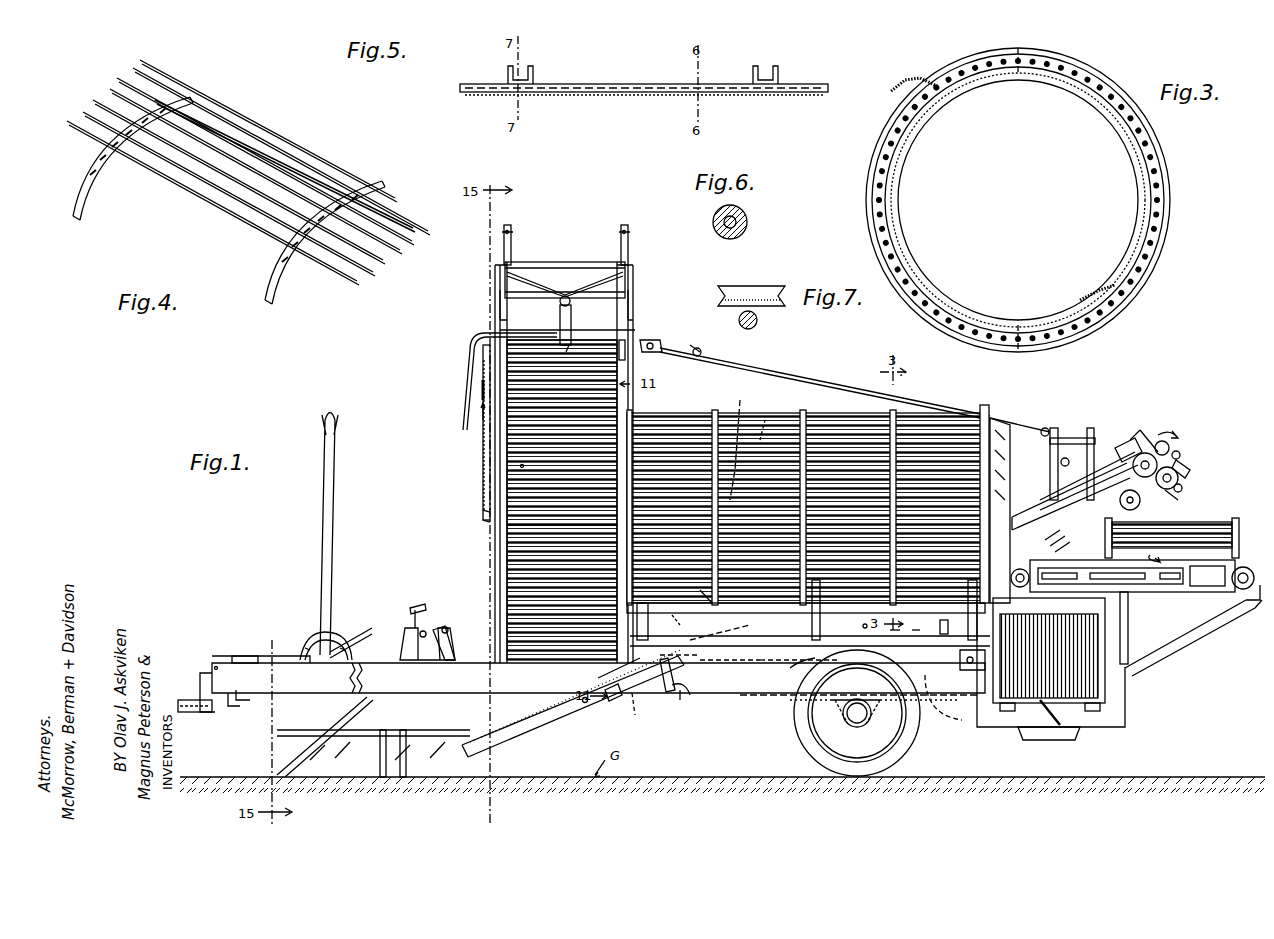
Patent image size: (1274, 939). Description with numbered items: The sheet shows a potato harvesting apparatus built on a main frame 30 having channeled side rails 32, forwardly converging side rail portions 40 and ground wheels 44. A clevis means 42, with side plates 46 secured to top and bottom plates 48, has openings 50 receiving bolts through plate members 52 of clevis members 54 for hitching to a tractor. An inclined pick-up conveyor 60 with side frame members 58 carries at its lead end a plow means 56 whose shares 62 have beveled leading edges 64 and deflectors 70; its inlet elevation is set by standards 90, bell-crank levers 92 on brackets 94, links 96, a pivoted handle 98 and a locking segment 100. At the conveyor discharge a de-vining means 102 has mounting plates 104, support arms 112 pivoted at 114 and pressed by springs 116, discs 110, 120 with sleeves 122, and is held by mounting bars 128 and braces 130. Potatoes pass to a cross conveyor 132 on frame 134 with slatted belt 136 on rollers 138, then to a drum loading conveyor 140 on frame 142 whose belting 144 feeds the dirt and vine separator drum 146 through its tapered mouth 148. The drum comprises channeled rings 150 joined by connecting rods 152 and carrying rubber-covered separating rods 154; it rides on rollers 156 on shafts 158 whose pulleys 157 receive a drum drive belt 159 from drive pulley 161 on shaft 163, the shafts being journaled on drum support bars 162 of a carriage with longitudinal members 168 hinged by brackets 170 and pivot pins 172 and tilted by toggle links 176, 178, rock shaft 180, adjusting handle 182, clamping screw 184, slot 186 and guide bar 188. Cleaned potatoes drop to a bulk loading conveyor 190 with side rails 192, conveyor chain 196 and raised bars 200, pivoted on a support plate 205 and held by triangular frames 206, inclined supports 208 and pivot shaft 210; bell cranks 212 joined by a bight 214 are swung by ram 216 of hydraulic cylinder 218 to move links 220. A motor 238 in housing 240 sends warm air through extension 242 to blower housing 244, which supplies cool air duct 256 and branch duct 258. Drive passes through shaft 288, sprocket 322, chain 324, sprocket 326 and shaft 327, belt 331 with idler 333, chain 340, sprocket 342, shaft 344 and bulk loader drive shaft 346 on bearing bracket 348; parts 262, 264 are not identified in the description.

In FIG. 1, the main frame 30 is at (745, 690).
In FIG. 1, the side rails 32 is at (788, 700).
In FIG. 1, the forwardly converging side rail portions 40 is at (345, 693).
In FIG. 1, the clevis means 42 is at (224, 658).
In FIG. 1, the ground wheels 44 is at (800, 733).
In FIG. 1, the side plates 46 is at (232, 708).
In FIG. 1, the top and bottom plates 48 is at (252, 656).
In FIG. 1, the openings 50 is at (215, 662).
In FIG. 1, the upstanding plate members 52 is at (200, 690).
In FIG. 1, the clevis members 54 is at (200, 714).
In FIG. 1, the plow means 56 is at (300, 760).
In FIG. 1, the side frame members 58 is at (512, 745).
In FIG. 1, the pick-up conveyor 60 is at (568, 725).
In FIG. 1, the shares 62 is at (345, 770).
In FIG. 1, the beveled leading edges 64 is at (322, 738).
In FIG. 1, the deflectors 70 is at (396, 775).
In FIG. 1, the standards 90 is at (448, 628).
In FIG. 1, the angular levers 92 is at (426, 630).
In FIG. 1, the upstanding brackets 94 is at (405, 650).
In FIG. 1, the links 96 is at (360, 635).
In FIG. 1, the pivoted handle 98 is at (330, 420).
In FIG. 1, the locking segment 100 is at (315, 638).
In FIG. 1, the de-vining means 102 is at (1160, 430).
In FIG. 1, the mounting plates 104 is at (1127, 428).
In FIG. 1, the discs 110 is at (1155, 475).
In FIG. 1, the support arms 112 is at (1180, 470).
In FIG. 1, the pivotal connection 114 is at (1190, 470).
In FIG. 1, the springs 116 is at (1145, 432).
In FIG. 1, the discs 120 is at (1182, 487).
In FIG. 1, the sleeves 122 is at (1215, 486).
In FIG. 1, the mounting bars 128 is at (1120, 445).
In FIG. 1, the braces 130 is at (1120, 490).
In FIG. 1, the cross conveyor 132 is at (1213, 530).
In FIG. 1, the cross conveyor frame 134 is at (1185, 645).
In FIG. 1, the slatted conveyor belt 136 is at (1165, 522).
In FIG. 1, the rollers 138 is at (1110, 528).
In FIG. 1, the drum loading conveyor 140 is at (1140, 592).
In FIG. 1, the drum loading conveyor frame 142 is at (1170, 595).
In FIG. 1, the belting 144 is at (1245, 605).
In FIG. 3, the dirt and vine separator drum 146 is at (1105, 78).
In FIG. 1, the dirt and vine separator drum 146 is at (831, 400).
In FIG. 1, the tapered mouth 148 is at (1000, 418).
In FIG. 4, the rings 150 is at (190, 95).
In FIG. 5, the rings 150 is at (530, 70).
In FIG. 7, the rings 150 is at (752, 286).
In FIG. 3, the rings 150 is at (1150, 128).
In FIG. 1, the rings 150 is at (650, 412).
In FIG. 4, the connecting rods 152 is at (403, 220).
In FIG. 3, the connecting rods 152 is at (1020, 70).
In FIG. 1, the connecting rods 152 is at (743, 420).
In FIG. 4, the separating rods 154 is at (95, 145).
In FIG. 5, the separating rods 154 is at (480, 95).
In FIG. 6, the separating rods 154 is at (748, 215).
In FIG. 7, the separating rods 154 is at (758, 322).
In FIG. 3, the separating rods 154 is at (1158, 210).
In FIG. 1, the separating rods 154 is at (680, 430).
In FIG. 1, the rollers 156 is at (998, 548).
In FIG. 1, the pulleys 157 is at (905, 641).
In FIG. 1, the shaft 158 is at (714, 604).
In FIG. 1, the drum drive belt 159 is at (926, 641).
In FIG. 1, the drum drive pulley 161 is at (944, 634).
In FIG. 1, the drum support bars 162 is at (645, 603).
In FIG. 1, the shaft 163 is at (864, 628).
In FIG. 1, the longitudinal members 168 is at (800, 662).
In FIG. 1, the bifurcated brackets 170 is at (968, 664).
In FIG. 1, the pivot pins 172 is at (955, 660).
In FIG. 1, the depending links 176 is at (619, 673).
In FIG. 1, the cooperating links 178 is at (645, 712).
In FIG. 1, the rock shaft 180 is at (600, 702).
In FIG. 1, the adjusting handle 182 is at (615, 702).
In FIG. 1, the clamping screw 184 is at (668, 692).
In FIG. 1, the longitudinal slot 186 is at (685, 695).
In FIG. 1, the guide bar 188 is at (682, 702).
In FIG. 1, the bulk loading conveyor 190 is at (510, 452).
In FIG. 1, the side rails 192 is at (520, 470).
In FIG. 1, the conveyor chain 196 is at (520, 470).
In FIG. 1, the raised bars 200 is at (515, 545).
In FIG. 1, the support plate 205 is at (630, 340).
In FIG. 1, the triangular frames 206 is at (500, 322).
In FIG. 1, the inclined supports 208 is at (497, 312).
In FIG. 1, the pivot shaft 210 is at (568, 268).
In FIG. 1, the bell cranks 212 is at (512, 230).
In FIG. 1, the bight 214 is at (518, 300).
In FIG. 1, the piston rod 216 is at (572, 304).
In FIG. 1, the hydraulic cylinder 218 is at (572, 325).
In FIG. 1, the links 220 is at (500, 245).
In FIG. 1, the motor 238 is at (1090, 676).
In FIG. 1, the motor housing 240 is at (1110, 688).
In FIG. 1, the motor housing extension 242 is at (932, 720).
In FIG. 1, the blower housing 244 is at (980, 728).
In FIG. 1, the cool air duct 256 is at (1050, 515).
In FIG. 1, the branch duct 258 is at (758, 665).
In FIG. 1, the frame connector 262 is at (700, 660).
In FIG. 1, the frame rail 264 is at (835, 660).
In FIG. 1, the shaft 288 is at (483, 522).
In FIG. 1, the sprocket 322 is at (483, 512).
In FIG. 1, the chain 324 is at (470, 390).
In FIG. 1, the sprocket 326 is at (482, 372).
In FIG. 1, the shaft 327 is at (477, 362).
In FIG. 1, the belt 331 is at (1180, 452).
In FIG. 1, the idler 333 is at (1170, 445).
In FIG. 1, the chain 340 is at (1054, 428).
In FIG. 1, the sprocket 342 is at (1090, 430).
In FIG. 1, the shaft 344 is at (1095, 438).
In FIG. 1, the bulk loader drive shaft 346 is at (718, 372).
In FIG. 1, the bearing bracket 348 is at (1060, 462).